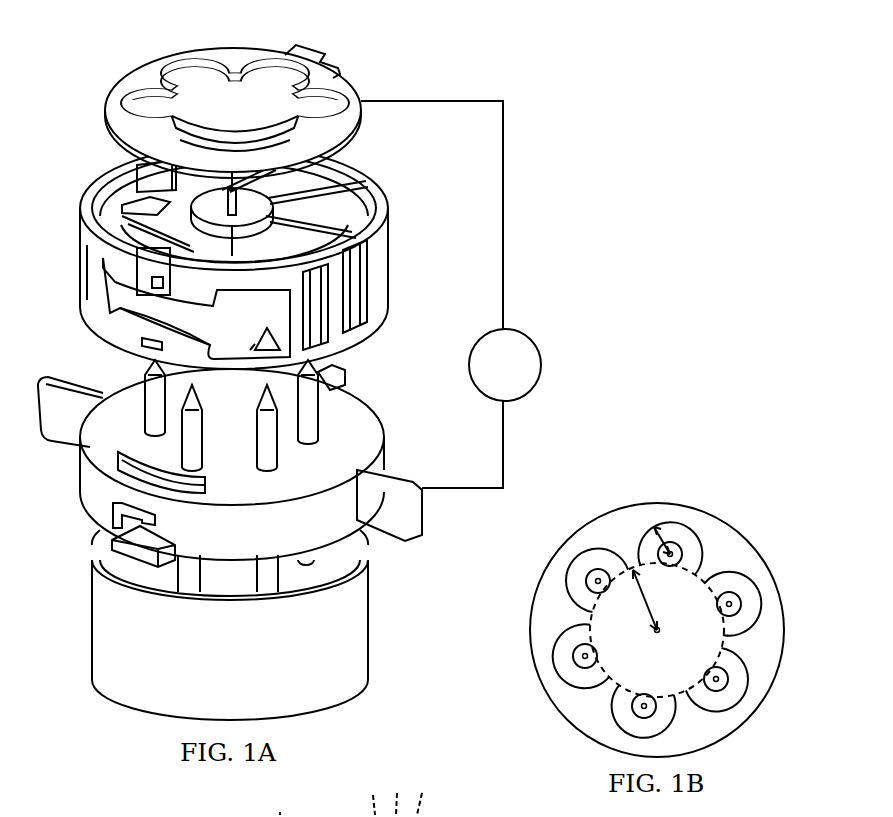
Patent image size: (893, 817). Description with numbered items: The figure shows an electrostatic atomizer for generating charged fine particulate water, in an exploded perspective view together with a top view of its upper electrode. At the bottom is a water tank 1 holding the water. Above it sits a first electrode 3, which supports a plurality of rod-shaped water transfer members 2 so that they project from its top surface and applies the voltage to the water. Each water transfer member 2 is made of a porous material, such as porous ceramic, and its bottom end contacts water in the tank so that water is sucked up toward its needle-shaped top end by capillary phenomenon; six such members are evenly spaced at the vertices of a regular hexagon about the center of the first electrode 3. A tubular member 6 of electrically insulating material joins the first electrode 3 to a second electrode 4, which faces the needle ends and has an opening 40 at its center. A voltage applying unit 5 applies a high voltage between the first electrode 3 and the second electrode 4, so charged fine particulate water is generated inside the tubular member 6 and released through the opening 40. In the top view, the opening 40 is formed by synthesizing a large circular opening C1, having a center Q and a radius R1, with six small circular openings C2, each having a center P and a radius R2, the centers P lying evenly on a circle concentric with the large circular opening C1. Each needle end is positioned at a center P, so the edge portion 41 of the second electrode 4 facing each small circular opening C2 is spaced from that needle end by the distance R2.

In FIG. 1A, the water tank 1 is at (338, 608).
In FIG. 1A, the water transfer member 2 is at (265, 440).
In FIG. 1B, the water transfer member 2 is at (733, 602).
In FIG. 1A, the first electrode 3 is at (376, 465).
In FIG. 1A, the second electrode 4 is at (340, 87).
In FIG. 1B, the second electrode 4 is at (553, 613).
In FIG. 1A, the opening 40 is at (228, 108).
In FIG. 1B, the opening 40 is at (620, 635).
In FIG. 1B, the edge portion 41 is at (703, 555).
In FIG. 1A, the voltage applying unit 5 is at (498, 357).
In FIG. 1A, the tubular member 6 is at (380, 273).
In FIG. 1B, the large circular opening C1 is at (720, 655).
In FIG. 1B, the small circular opening C2 is at (598, 549).
In FIG. 1B, the center of small circular opening P is at (596, 580).
In FIG. 1B, the center of large circular opening Q is at (660, 647).
In FIG. 1B, the radius of large circular opening R1 is at (637, 600).
In FIG. 1B, the radius of small circular opening R2 is at (663, 540).